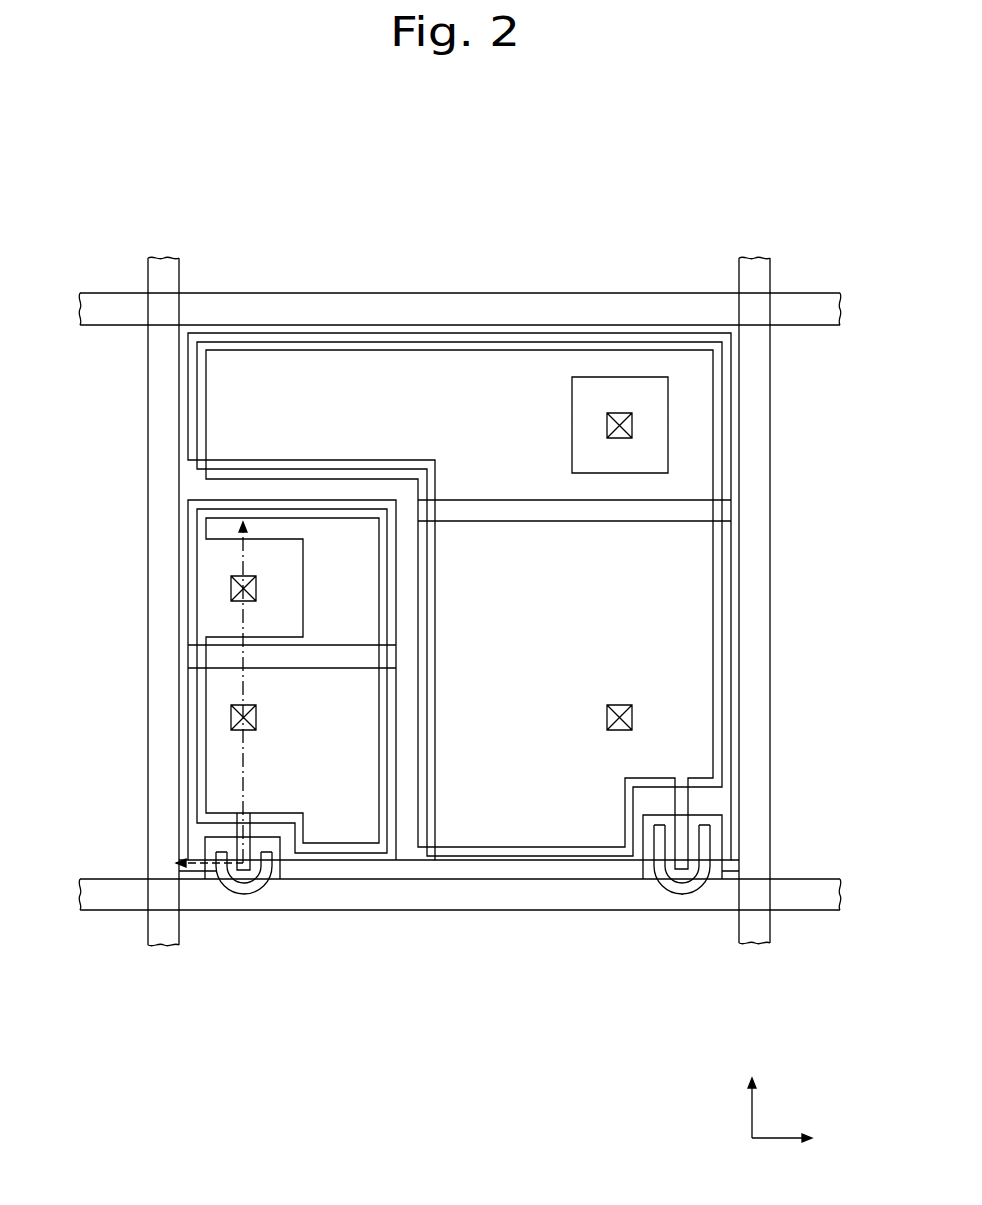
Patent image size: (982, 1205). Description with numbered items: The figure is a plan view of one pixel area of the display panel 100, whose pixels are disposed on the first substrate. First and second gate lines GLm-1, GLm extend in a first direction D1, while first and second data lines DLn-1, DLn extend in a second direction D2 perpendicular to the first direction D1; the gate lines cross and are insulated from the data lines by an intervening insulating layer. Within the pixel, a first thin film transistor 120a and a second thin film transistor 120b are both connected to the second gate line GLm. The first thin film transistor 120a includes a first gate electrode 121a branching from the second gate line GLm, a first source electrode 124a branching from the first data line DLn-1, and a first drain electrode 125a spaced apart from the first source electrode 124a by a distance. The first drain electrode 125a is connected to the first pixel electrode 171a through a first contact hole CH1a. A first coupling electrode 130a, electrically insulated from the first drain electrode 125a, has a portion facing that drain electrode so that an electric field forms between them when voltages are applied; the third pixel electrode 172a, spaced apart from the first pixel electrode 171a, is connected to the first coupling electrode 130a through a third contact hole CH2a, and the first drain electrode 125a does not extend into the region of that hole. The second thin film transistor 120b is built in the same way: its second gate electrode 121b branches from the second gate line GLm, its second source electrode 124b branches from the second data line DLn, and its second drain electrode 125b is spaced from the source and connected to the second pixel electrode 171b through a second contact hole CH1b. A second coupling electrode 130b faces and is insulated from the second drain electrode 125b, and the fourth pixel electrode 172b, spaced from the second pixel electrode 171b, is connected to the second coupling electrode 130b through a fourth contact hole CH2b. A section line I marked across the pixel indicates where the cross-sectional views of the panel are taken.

The display panel 100 is at (687, 188).
The first gate line GLm-1 is at (100, 306).
The second gate line GLm is at (104, 888).
The first data line DLn-1 is at (163, 267).
The second data line DLn is at (751, 267).
The first thin film transistor 120a is at (162, 994).
The second thin film transistor 120b is at (588, 994).
The first gate electrode 121a is at (276, 875).
The second gate electrode 121b is at (715, 875).
The first source electrode 124a is at (246, 894).
The second source electrode 124b is at (678, 892).
The first drain electrode 125a is at (212, 894).
The second drain electrode 125b is at (653, 876).
The first coupling electrode 130a is at (353, 848).
The second coupling electrode 130b is at (505, 848).
The first pixel electrode 171a is at (378, 858).
The second pixel electrode 171b is at (553, 862).
The third pixel electrode 172a is at (188, 625).
The fourth pixel electrode 172b is at (733, 470).
The first contact hole CH1a is at (231, 717).
The second contact hole CH1b is at (633, 717).
The third contact hole CH2a is at (231, 588).
The fourth contact hole CH2b is at (633, 425).
The section line I-I' I is at (215, 694).
The first direction D1 is at (797, 1137).
The second direction D2 is at (750, 1091).